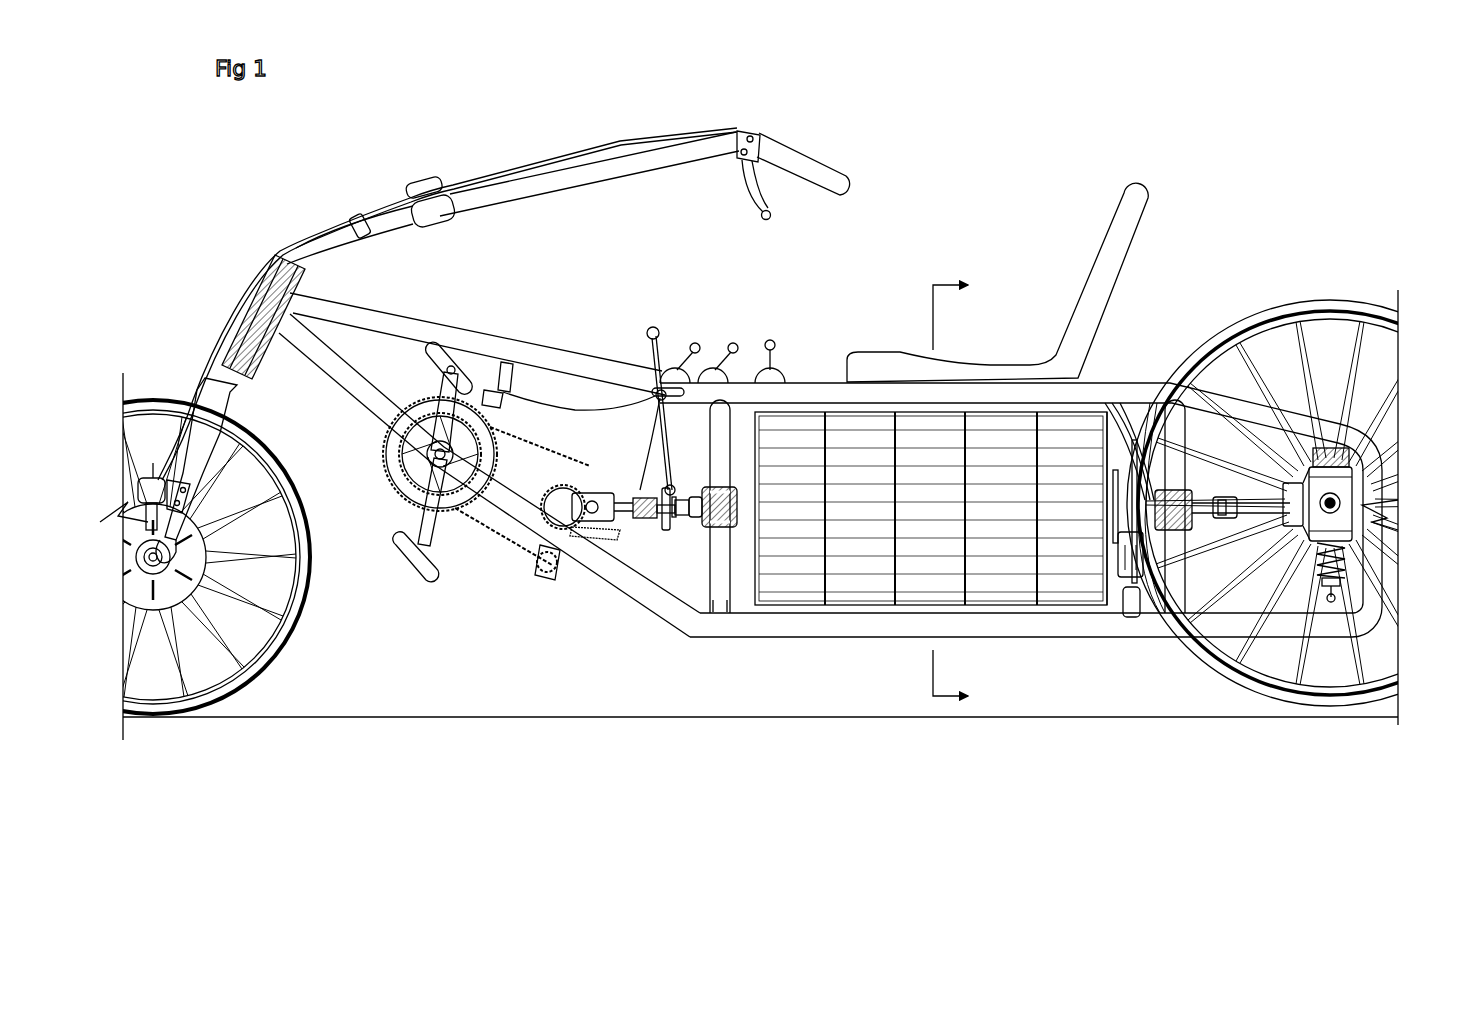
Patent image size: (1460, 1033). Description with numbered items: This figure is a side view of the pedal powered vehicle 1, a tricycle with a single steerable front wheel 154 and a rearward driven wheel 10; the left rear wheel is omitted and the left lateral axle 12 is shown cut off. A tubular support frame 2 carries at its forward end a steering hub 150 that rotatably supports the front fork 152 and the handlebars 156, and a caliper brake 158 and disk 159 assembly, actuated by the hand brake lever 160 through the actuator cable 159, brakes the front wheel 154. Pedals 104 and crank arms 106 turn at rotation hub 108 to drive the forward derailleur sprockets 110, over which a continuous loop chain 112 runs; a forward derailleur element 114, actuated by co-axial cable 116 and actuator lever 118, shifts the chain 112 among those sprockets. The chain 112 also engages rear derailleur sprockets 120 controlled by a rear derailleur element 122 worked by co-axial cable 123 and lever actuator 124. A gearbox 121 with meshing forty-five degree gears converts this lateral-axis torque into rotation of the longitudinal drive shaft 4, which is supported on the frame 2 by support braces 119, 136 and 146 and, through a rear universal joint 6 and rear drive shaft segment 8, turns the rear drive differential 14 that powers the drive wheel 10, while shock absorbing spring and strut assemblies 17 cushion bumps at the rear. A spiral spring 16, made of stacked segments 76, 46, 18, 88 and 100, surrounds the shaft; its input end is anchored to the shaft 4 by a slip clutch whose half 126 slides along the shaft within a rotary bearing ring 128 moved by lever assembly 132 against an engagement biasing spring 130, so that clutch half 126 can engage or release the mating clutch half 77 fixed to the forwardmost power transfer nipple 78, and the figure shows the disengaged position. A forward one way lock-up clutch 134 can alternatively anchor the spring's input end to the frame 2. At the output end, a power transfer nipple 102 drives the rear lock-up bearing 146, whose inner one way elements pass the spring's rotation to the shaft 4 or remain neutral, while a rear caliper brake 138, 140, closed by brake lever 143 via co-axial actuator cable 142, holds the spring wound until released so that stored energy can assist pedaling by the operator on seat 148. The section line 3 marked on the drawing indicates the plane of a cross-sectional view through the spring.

The pedal powered vehicle 1 is at (556, 118).
The tubular support frame 2 is at (533, 345).
The section line 3 is at (961, 493).
The drive shaft 4 is at (630, 520).
The rear universal joint 6 is at (1225, 520).
The rear drive shaft segment 8 is at (1248, 510).
The rear drive wheel 10 is at (1238, 318).
The left lateral axle 12 is at (1340, 503).
The rear drive differential 14 is at (1350, 490).
The spiral spring 16 is at (990, 590).
The shock absorbing spring and strut assemblies 17 is at (1350, 568).
The central spring segment 18 is at (928, 593).
The spring segment 46 is at (860, 592).
The spring segment 76 is at (795, 592).
The clutch half 77 is at (695, 520).
The forwardmost power transfer nipple 78 is at (747, 503).
The spring segment 88 is at (982, 595).
The spring segment 100 is at (1065, 592).
The power transfer nipple 102 is at (1120, 512).
The pedals 104 is at (445, 343).
The crank arms 106 is at (438, 395).
The rotation hub 108 is at (380, 433).
The forward derailleur sprockets 110 is at (383, 455).
The continuous loop chain 112 is at (497, 548).
The forward derailleur element 114 is at (505, 415).
The co-axial cable 116 is at (573, 345).
The actuator lever 118 is at (678, 340).
The support brace 119 is at (623, 460).
The rear derailleur sprockets 120 is at (580, 480).
The gearbox 121 is at (556, 508).
The rear derailleur element 122 is at (562, 582).
The co-axial cable 123 is at (668, 446).
The lever actuator 124 is at (713, 340).
The clutch half 126 is at (680, 498).
The rotary bearing ring 128 is at (667, 531).
The engagement biasing spring 130 is at (650, 520).
The lever assembly 132 is at (642, 350).
The forward one way lock-up clutch 134 is at (716, 515).
The support brace 136 is at (718, 600).
The rear caliper brake 138 is at (1125, 578).
The rear brake 140 is at (1127, 482).
The co-axial actuator cable 142 is at (1142, 412).
The brake lever 143 is at (757, 340).
The rear lock-up bearing 146 is at (1176, 402).
The seat 148 is at (990, 370).
The steering hub 150 is at (283, 291).
The front fork 152 is at (202, 450).
The front wheel 154 is at (307, 577).
The handlebars 156 is at (622, 170).
The caliper brake 158 is at (140, 488).
The disk 159 is at (248, 282).
The hand brake lever 160 is at (770, 196).